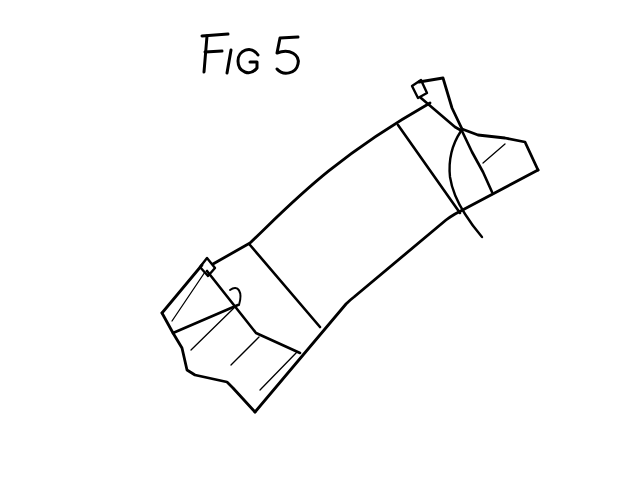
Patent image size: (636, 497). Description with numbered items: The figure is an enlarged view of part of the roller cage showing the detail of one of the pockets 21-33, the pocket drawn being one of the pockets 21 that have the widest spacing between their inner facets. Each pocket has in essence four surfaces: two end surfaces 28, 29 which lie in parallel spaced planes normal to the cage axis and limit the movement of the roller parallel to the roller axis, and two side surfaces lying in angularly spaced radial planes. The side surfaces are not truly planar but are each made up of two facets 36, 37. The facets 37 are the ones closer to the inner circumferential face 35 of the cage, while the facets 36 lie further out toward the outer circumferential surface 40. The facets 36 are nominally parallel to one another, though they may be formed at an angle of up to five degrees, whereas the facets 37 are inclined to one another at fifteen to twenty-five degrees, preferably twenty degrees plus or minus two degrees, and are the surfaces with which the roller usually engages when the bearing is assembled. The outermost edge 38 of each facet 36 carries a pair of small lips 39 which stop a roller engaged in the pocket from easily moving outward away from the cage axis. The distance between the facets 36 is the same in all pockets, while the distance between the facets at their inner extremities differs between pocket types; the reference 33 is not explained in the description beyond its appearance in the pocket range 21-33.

The arc-shaped band segment 21-33 is at (311, 215).
The pocket 21 is at (311, 215).
The band segment 33 is at (344, 117).
The end surface 28 is at (424, 246).
The end surface 29 is at (373, 248).
The inner circumferential face 35 is at (352, 301).
The facet 36 is at (173, 332).
The facet 37 is at (484, 175).
The outermost edge 38 is at (202, 265).
The lips 39 is at (416, 93).
The outer circumferential surface 40 is at (298, 199).